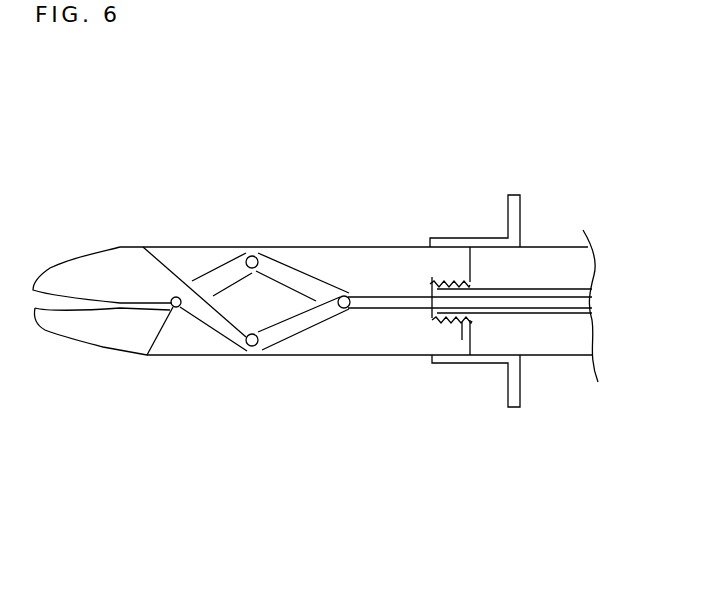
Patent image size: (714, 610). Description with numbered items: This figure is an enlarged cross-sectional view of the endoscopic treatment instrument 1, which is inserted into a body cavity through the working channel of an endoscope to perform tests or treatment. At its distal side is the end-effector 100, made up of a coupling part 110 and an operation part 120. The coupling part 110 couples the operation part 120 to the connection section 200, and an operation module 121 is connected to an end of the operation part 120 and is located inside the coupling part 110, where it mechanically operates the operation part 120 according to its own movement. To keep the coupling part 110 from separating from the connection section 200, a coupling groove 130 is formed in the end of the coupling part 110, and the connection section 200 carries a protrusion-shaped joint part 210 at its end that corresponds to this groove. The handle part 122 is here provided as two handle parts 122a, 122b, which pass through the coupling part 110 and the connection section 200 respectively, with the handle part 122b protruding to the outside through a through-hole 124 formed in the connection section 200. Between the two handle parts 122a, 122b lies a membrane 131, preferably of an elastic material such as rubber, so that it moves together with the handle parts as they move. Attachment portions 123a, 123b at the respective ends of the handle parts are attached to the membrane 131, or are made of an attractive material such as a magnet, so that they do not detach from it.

The endoscopic treatment instrument 1 is at (522, 126).
The end-effector 100 is at (198, 372).
The coupling part 110 is at (303, 247).
The operation part 120 is at (113, 247).
The operation module 121 is at (283, 330).
The handle part 122 is at (495, 513).
The handle part 122a is at (368, 303).
The handle part 122b is at (558, 300).
The attachment portion 123a is at (432, 280).
The attachment portion 123b is at (455, 282).
The through-hole 124 is at (596, 296).
The coupling groove 130 is at (443, 320).
The membrane 131 is at (404, 297).
The connection section 200 is at (592, 263).
The joint part 210 is at (455, 363).